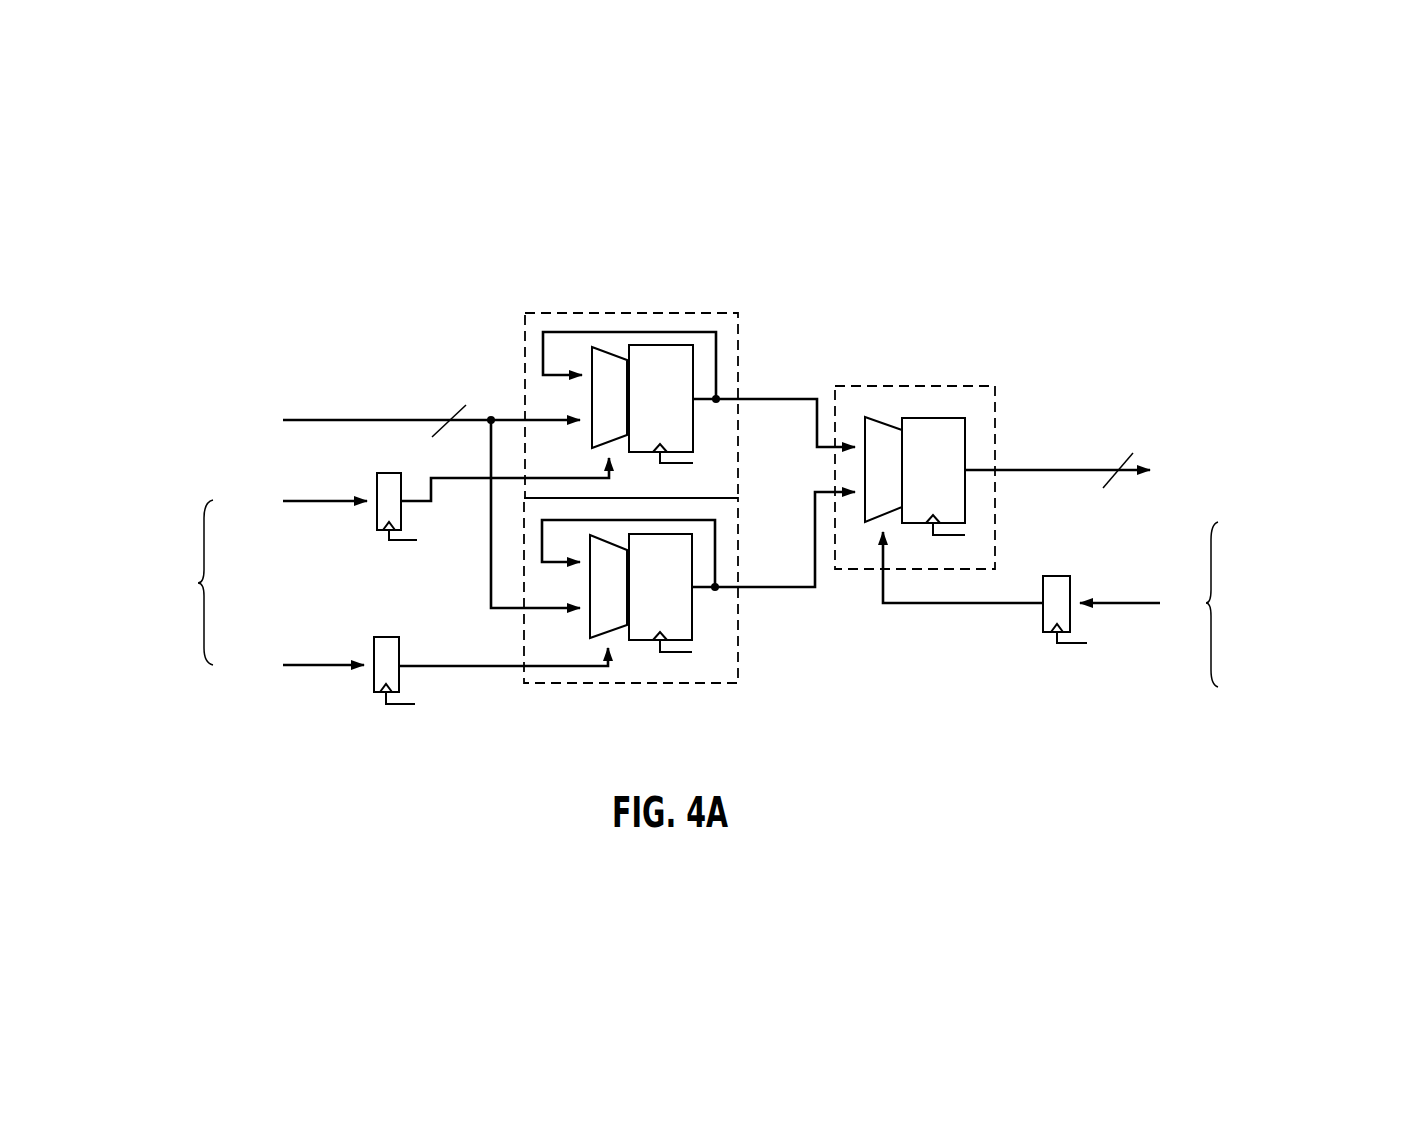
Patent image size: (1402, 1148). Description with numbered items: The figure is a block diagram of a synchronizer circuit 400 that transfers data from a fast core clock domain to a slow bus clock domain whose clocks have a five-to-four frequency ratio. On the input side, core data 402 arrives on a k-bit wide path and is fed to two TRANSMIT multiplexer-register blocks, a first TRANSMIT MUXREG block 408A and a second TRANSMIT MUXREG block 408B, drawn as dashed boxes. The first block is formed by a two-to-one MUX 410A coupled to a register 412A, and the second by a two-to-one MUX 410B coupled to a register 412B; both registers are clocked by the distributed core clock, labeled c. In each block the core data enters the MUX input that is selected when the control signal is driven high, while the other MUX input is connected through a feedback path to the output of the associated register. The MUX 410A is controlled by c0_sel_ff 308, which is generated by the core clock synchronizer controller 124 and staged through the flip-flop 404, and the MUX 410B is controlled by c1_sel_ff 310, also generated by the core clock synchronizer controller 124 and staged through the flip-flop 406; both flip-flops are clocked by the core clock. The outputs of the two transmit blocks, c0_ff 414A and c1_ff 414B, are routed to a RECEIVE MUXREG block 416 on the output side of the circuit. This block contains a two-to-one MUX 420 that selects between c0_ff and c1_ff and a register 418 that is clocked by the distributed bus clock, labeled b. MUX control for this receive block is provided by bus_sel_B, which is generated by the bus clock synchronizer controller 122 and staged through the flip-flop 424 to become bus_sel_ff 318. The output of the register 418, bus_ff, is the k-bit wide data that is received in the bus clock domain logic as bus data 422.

The synchronizer circuit 400 is at (926, 250).
The core data 402 is at (338, 420).
The flip-flop 404 is at (388, 480).
The flip-flop 406 is at (385, 640).
The first TRANSMIT multiplexer-register block 408A is at (738, 328).
The second TRANSMIT multiplexer-register block 408B is at (738, 665).
The 2:1 MUX 410A is at (590, 404).
The 2:1 MUX 410B is at (590, 618).
The register 412A is at (683, 412).
The register 412B is at (682, 599).
The c0_ff 414A is at (812, 394).
The c1_ff 414B is at (810, 590).
The RECEIVE multiplexer-register block 416 is at (995, 393).
The register 418 is at (952, 483).
The 2:1 MUX 420 is at (885, 432).
The bus data 422 is at (1055, 471).
The flip-flop 424 is at (1070, 620).
The c0_sel_ff 308 is at (443, 480).
The c1_sel_ff 310 is at (445, 667).
The bus_sel_ff 318 is at (1030, 603).
The core clock synchronizer controller 124 is at (130, 688).
The bus clock synchronizer controller 122 is at (1325, 711).